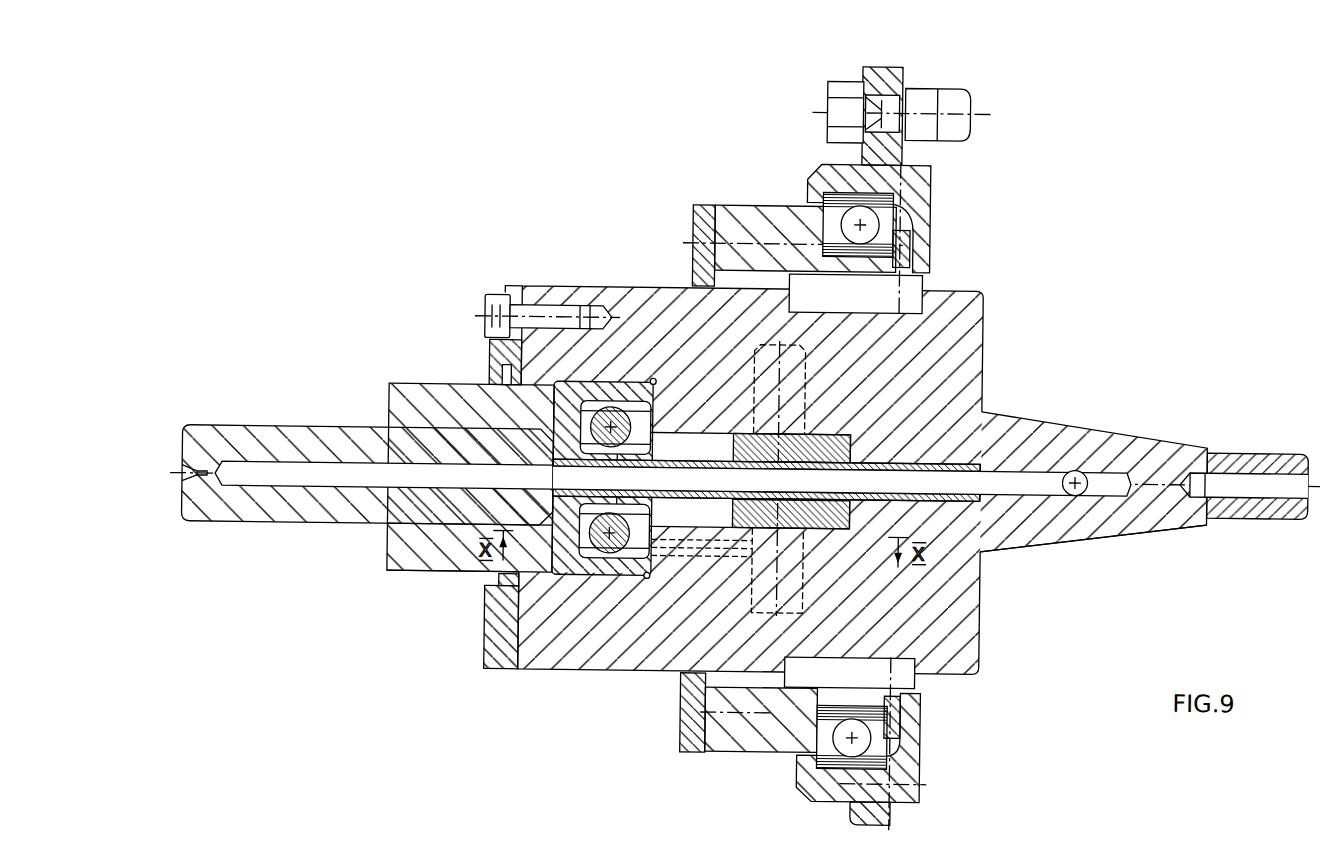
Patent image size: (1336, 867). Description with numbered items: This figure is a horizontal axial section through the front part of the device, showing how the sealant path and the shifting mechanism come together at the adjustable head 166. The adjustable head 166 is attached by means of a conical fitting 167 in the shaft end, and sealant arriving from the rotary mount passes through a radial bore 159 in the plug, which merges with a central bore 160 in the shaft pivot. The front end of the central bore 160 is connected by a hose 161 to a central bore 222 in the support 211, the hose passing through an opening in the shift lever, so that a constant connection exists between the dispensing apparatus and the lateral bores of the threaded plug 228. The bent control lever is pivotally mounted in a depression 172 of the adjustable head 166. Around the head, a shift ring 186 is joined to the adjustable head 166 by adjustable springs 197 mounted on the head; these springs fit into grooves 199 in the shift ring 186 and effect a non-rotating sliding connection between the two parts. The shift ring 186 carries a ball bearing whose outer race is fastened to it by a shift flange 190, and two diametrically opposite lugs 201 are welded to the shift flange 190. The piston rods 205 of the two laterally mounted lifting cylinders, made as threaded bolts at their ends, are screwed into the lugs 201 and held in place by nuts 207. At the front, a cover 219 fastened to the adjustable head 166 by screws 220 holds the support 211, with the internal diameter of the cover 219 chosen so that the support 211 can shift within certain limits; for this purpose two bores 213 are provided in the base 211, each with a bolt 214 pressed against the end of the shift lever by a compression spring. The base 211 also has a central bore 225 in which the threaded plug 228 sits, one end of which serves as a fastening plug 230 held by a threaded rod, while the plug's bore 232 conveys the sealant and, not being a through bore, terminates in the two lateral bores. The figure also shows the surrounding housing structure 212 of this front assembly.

The radial bore 159 is at (1080, 489).
The central bore 160 is at (1078, 484).
The hose 161 is at (1050, 473).
The adjustable head 166 is at (966, 638).
The conical fitting 167 is at (1029, 536).
The depression 172 is at (805, 586).
The shift ring 186 is at (726, 223).
The shift flange 190 is at (878, 183).
The adjustable springs 197 is at (911, 281).
The grooves 199 is at (753, 283).
The lugs 201 is at (900, 148).
The piston rods 205 is at (954, 100).
The nuts 207 is at (827, 96).
The support 211 is at (406, 566).
The housing 212 is at (558, 580).
The bores 213 is at (623, 421).
The bolt 214 is at (605, 414).
The cover 219 is at (493, 668).
The screws 220 is at (497, 303).
The central bore 222 is at (501, 383).
The central bore 225 is at (450, 531).
The threaded plug 228 is at (247, 518).
The fastening plug 230 is at (430, 444).
The bore 232 is at (327, 472).